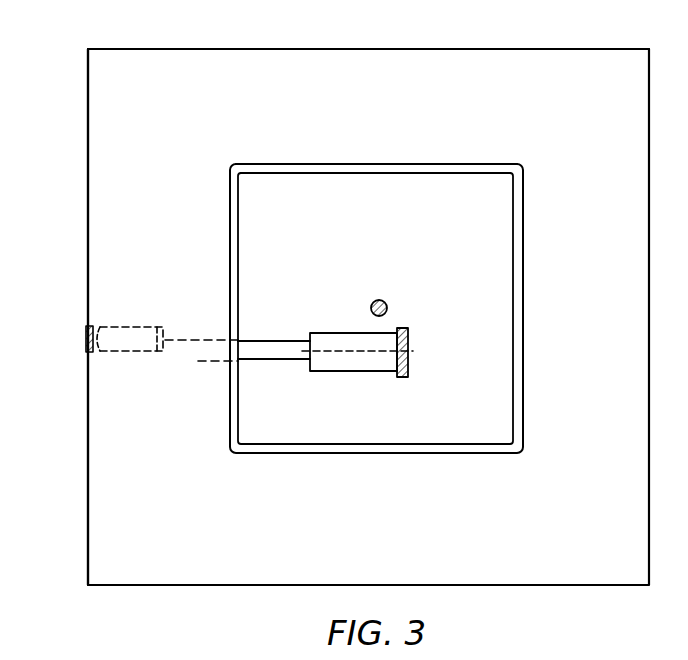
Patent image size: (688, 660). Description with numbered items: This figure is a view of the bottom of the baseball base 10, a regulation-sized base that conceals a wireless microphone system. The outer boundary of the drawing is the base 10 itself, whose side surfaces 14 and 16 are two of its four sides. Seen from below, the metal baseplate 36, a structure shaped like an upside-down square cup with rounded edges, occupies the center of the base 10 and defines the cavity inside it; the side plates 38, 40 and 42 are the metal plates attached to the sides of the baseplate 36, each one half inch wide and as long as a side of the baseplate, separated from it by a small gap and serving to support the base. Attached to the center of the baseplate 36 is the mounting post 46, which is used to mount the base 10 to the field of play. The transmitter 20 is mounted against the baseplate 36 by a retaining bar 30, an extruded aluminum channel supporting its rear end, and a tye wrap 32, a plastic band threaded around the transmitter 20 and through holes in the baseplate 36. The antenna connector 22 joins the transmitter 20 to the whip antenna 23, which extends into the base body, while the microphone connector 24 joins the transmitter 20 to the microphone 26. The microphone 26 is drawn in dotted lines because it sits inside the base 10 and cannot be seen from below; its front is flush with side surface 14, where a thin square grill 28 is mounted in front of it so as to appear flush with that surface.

The baseball base 10 is at (376, 298).
The side surface 14 is at (56, 317).
The side surface 16 is at (368, 30).
The transmitter 20 is at (347, 371).
The antenna connector 22 is at (274, 368).
The antenna 23 is at (206, 380).
The microphone connector 24 is at (274, 322).
The microphone 26 is at (167, 356).
The grill 28 is at (64, 349).
The retaining bar 30 is at (430, 350).
The tye wrap 32 is at (357, 383).
The baseplate 36 is at (272, 216).
The side plate 38 is at (345, 308).
The side plate 40 is at (408, 308).
The side plate 42 is at (376, 147).
The mounting post 46 is at (399, 289).